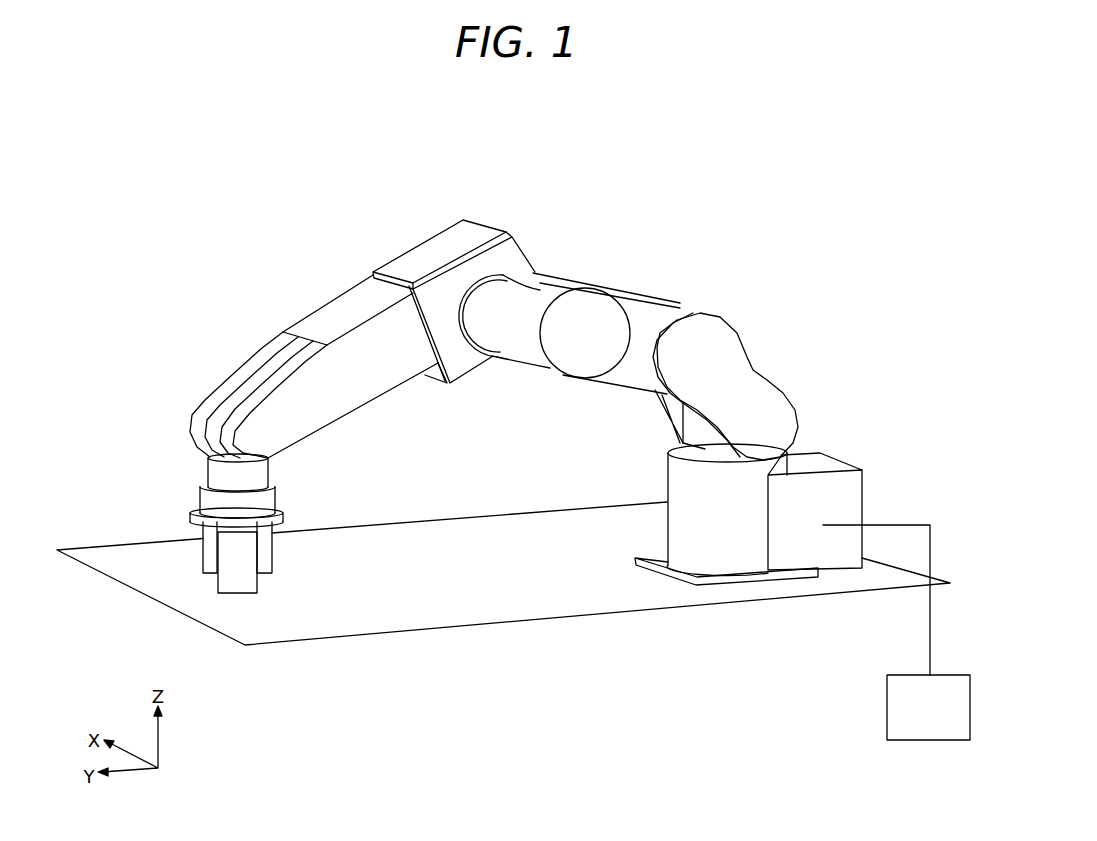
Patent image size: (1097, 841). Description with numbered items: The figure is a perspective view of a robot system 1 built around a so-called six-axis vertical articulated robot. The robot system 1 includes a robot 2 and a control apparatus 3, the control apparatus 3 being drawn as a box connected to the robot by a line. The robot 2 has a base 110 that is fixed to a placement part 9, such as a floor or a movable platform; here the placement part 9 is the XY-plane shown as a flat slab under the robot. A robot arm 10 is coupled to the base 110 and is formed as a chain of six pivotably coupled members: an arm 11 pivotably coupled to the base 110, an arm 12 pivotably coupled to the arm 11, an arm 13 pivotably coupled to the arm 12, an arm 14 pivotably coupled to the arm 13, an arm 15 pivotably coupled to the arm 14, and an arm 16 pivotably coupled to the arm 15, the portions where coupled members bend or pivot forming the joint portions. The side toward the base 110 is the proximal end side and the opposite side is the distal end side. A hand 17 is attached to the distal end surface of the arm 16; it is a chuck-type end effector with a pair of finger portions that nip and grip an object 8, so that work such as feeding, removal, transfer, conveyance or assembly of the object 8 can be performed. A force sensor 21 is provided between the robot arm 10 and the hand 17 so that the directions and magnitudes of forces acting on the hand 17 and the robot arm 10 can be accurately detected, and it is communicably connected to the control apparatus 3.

The robot system 1 is at (747, 192).
The robot 2 is at (739, 278).
The control apparatus 3 is at (903, 703).
The object 8 is at (240, 580).
The placement part 9 is at (108, 557).
The robot arm 10 is at (569, 237).
The arm 11 is at (783, 412).
The arm 12 is at (598, 327).
The arm 13 is at (445, 242).
The arm 14 is at (332, 318).
The arm 15 is at (218, 400).
The arm 16 is at (217, 472).
The hand 17 is at (210, 553).
The force sensor 21 is at (213, 505).
The base 110 is at (737, 543).